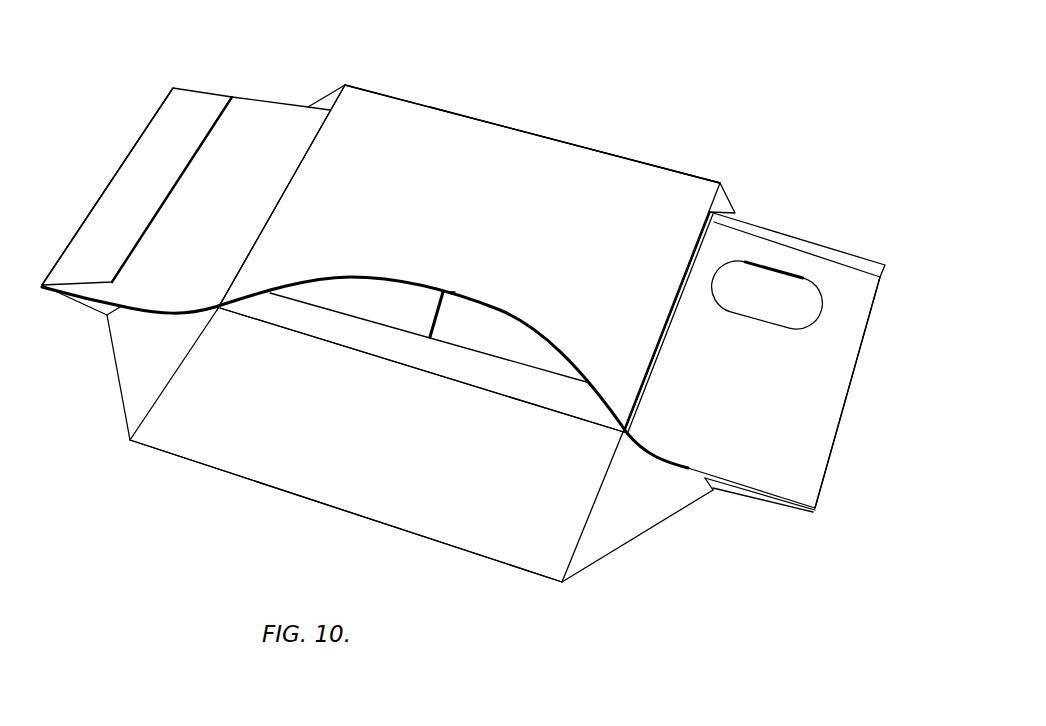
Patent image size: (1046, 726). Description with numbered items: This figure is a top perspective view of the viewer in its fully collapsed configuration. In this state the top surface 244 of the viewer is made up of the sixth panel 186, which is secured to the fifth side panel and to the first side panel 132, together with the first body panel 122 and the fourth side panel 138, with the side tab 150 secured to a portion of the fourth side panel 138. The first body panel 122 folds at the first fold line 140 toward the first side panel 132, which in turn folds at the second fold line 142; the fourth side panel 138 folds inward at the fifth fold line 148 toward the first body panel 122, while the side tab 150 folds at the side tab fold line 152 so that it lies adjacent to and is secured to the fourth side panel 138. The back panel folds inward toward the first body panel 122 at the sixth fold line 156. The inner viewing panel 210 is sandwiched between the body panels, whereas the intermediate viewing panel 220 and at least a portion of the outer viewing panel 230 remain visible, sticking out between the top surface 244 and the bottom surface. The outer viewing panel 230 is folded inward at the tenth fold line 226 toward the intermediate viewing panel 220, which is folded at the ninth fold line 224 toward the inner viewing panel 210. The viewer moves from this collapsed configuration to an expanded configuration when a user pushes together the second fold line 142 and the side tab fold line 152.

The first body panel 122 is at (518, 211).
The first side panel 132 is at (782, 292).
The fourth side panel 138 is at (253, 199).
The first fold line 140 is at (705, 212).
The second fold line 142 is at (842, 449).
The fifth fold line 148 is at (290, 188).
The side tab 150 is at (157, 207).
The side tab fold line 152 is at (123, 164).
The sixth fold line 156 is at (433, 103).
The sixth panel 186 is at (762, 406).
The inner viewing panel 210 is at (362, 340).
The intermediate viewing panel 220 is at (397, 446).
The ninth fold line 224 is at (541, 409).
The tenth fold line 226 is at (396, 530).
The outer viewing panel 230 is at (634, 527).
The top surface 244 is at (553, 158).